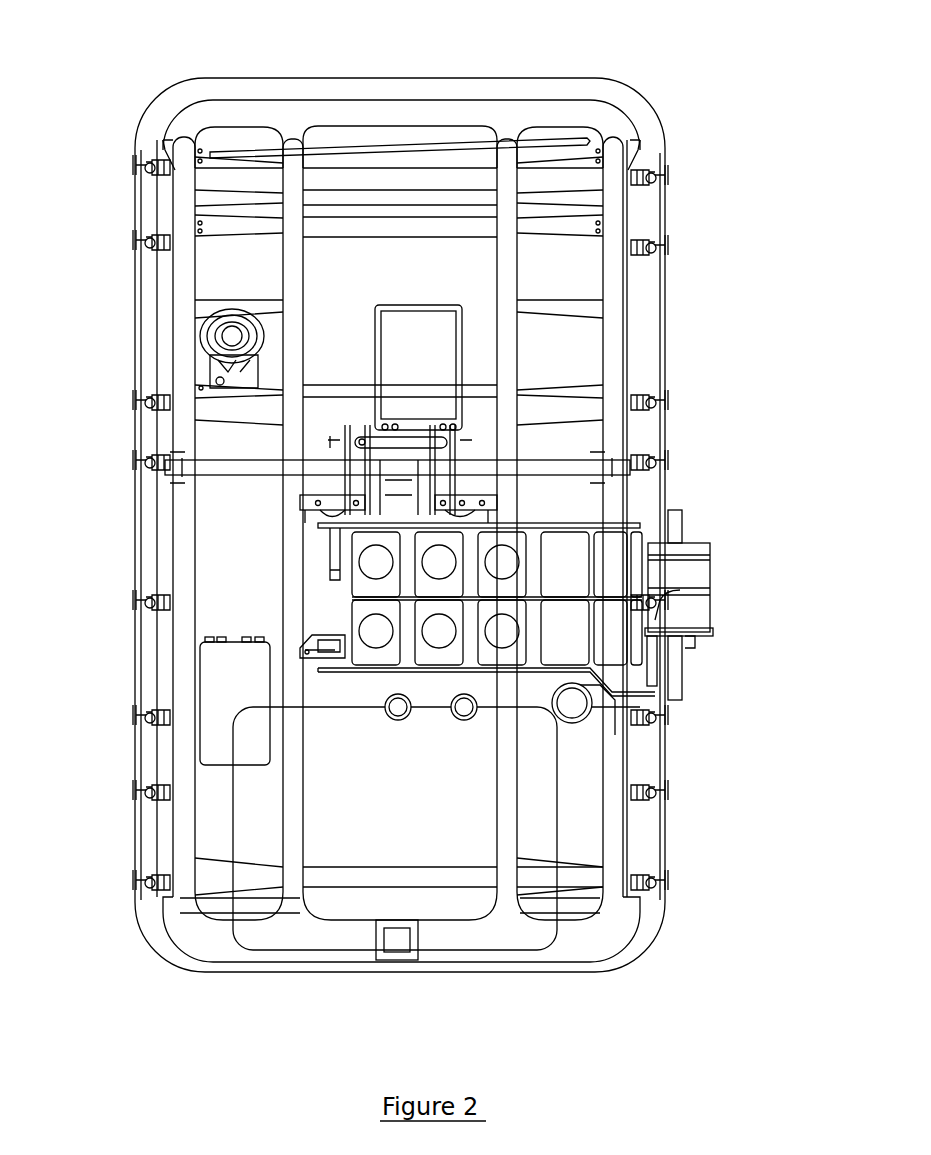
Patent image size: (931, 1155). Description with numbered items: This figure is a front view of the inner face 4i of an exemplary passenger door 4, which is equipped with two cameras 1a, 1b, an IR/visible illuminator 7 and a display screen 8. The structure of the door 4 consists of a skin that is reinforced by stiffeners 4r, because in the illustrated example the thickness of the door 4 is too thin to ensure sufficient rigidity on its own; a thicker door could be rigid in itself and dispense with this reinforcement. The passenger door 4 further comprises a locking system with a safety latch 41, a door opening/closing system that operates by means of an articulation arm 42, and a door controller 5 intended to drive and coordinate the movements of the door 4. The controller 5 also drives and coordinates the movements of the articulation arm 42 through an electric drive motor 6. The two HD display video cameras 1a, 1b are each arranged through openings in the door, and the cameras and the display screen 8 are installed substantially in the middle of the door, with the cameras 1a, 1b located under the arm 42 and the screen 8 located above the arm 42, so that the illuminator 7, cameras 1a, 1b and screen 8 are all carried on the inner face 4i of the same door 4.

The passenger door 4 is at (738, 262).
The inner face 4i is at (418, 108).
The stiffeners 4r is at (510, 358).
The articulation arm 42 is at (535, 520).
The safety latch 41 is at (343, 483).
The display screen 8 is at (424, 369).
The electric drive motor 6 is at (695, 548).
The door controller 5 is at (230, 683).
The IR/visible illuminator 7 is at (595, 705).
The camera 1a is at (398, 722).
The camera 1b is at (464, 722).